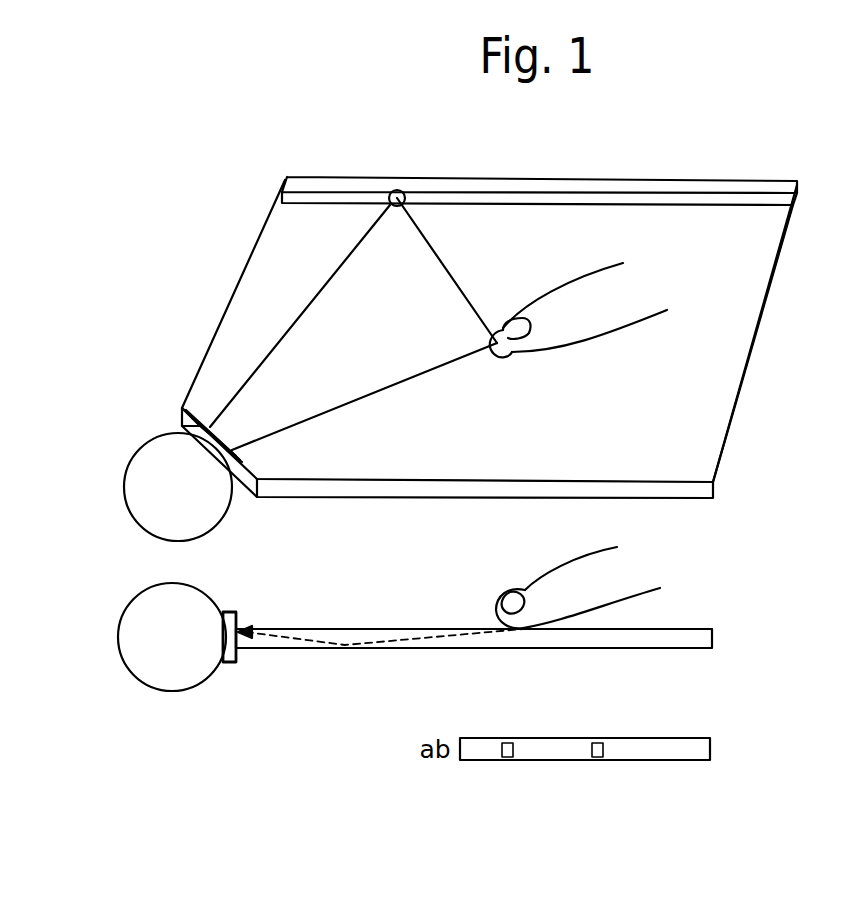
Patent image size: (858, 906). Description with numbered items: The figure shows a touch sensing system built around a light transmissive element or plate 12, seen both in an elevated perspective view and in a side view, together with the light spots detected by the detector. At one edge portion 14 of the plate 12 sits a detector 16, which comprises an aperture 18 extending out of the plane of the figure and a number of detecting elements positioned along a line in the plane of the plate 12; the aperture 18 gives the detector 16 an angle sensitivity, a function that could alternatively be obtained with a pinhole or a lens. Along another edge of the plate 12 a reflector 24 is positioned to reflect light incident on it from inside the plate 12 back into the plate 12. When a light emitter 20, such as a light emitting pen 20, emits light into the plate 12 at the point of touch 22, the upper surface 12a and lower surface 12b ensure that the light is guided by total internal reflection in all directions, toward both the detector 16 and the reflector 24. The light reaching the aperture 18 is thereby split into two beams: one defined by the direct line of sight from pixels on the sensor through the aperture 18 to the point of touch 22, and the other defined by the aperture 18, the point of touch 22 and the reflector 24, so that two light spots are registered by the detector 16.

The light transmissive plate 12 is at (780, 257).
The upper surface 12a is at (733, 317).
The lower surface 12b is at (699, 649).
The edge portion 14 is at (244, 482).
The detector 16 is at (175, 562).
The aperture 18 is at (182, 432).
The light emitting pen 20 is at (587, 292).
The point of touch 22 is at (517, 353).
The reflector 24 is at (505, 173).